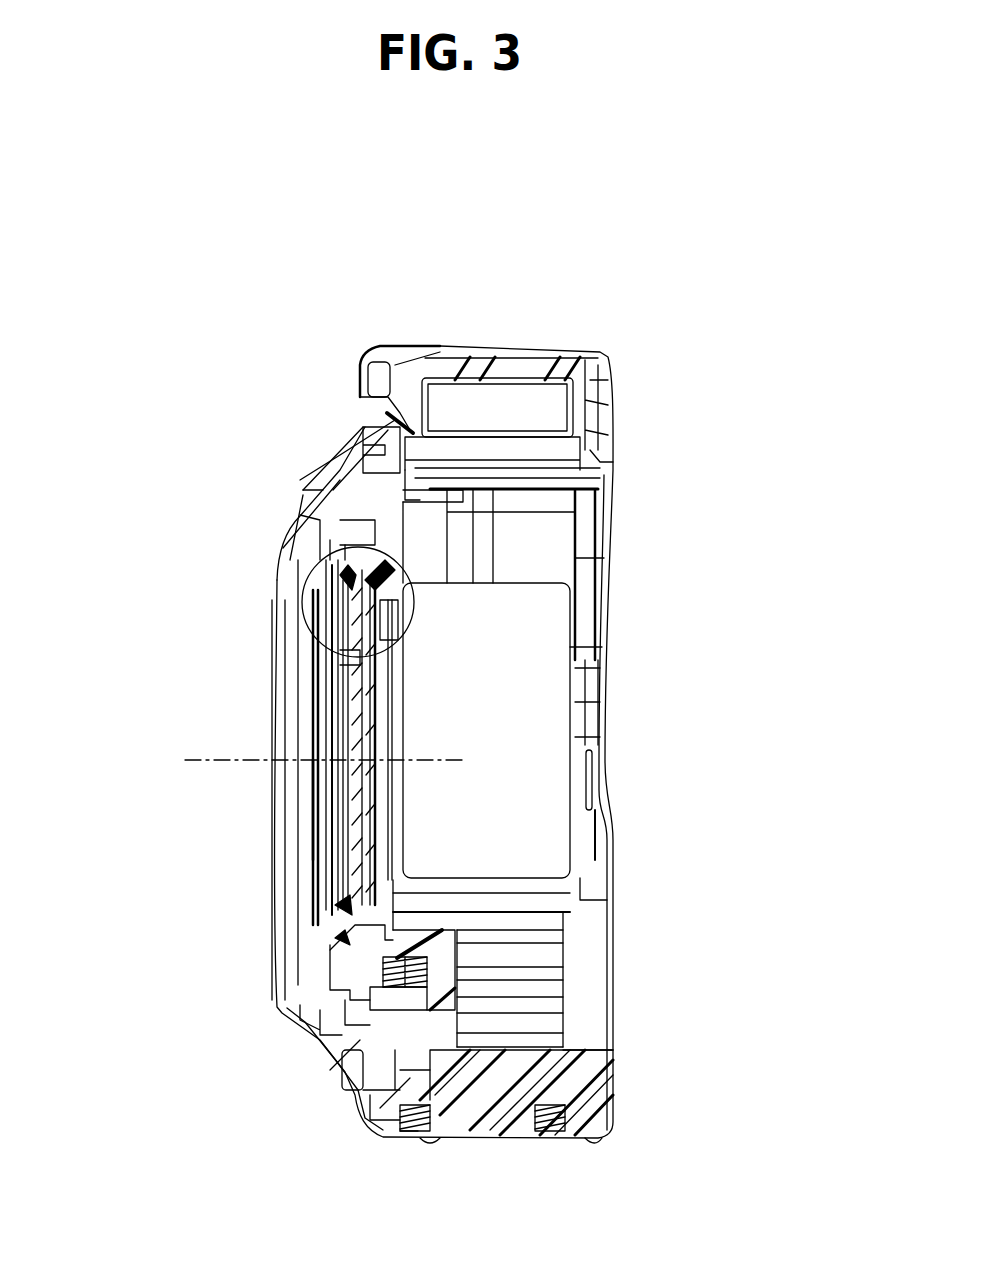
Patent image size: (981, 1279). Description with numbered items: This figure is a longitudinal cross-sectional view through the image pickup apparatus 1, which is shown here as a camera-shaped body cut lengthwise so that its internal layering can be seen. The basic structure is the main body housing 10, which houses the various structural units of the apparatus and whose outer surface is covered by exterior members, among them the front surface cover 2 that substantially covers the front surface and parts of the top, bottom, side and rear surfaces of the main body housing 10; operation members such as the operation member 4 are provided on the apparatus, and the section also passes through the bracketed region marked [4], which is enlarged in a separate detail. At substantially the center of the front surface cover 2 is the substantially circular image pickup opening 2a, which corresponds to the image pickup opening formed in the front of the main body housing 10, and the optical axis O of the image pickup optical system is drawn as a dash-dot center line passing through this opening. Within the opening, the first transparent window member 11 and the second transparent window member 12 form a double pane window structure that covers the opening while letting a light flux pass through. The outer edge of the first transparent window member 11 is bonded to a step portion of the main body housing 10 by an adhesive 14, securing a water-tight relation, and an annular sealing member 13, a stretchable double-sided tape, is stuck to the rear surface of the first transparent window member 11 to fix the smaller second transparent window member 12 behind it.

The image pickup apparatus 1 is at (655, 269).
The front surface cover 2 is at (447, 352).
The main body housing 10 is at (335, 512).
The operation member 4 is at (310, 580).
The adhesive 14 is at (348, 582).
The sealing member 13 is at (372, 583).
The first transparent window member 11 is at (392, 607).
The second transparent window member 12 is at (348, 657).
The optical axis O is at (205, 760).
The image pickup opening 2a is at (336, 806).